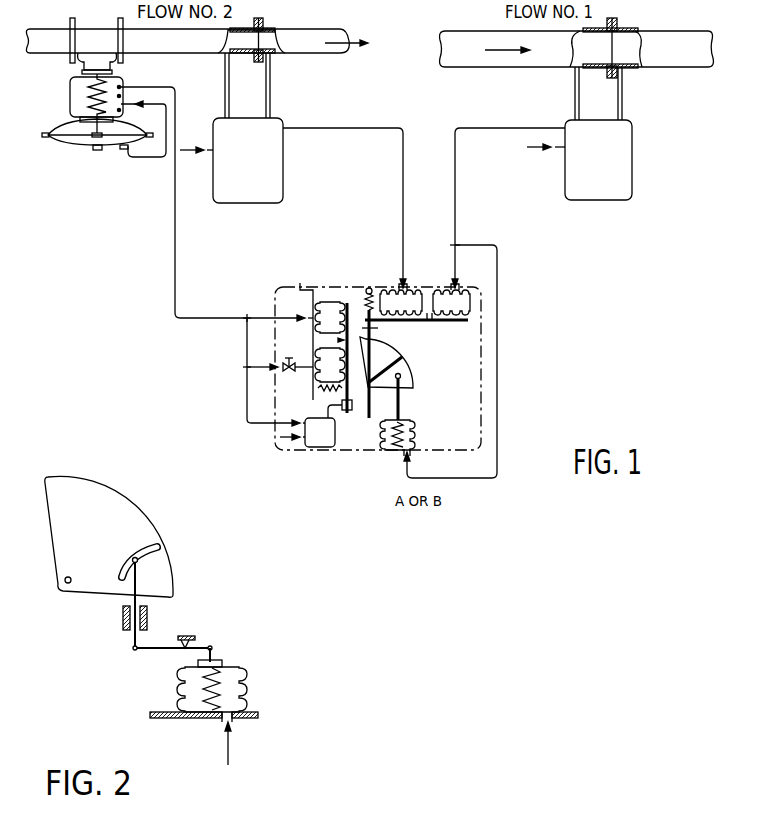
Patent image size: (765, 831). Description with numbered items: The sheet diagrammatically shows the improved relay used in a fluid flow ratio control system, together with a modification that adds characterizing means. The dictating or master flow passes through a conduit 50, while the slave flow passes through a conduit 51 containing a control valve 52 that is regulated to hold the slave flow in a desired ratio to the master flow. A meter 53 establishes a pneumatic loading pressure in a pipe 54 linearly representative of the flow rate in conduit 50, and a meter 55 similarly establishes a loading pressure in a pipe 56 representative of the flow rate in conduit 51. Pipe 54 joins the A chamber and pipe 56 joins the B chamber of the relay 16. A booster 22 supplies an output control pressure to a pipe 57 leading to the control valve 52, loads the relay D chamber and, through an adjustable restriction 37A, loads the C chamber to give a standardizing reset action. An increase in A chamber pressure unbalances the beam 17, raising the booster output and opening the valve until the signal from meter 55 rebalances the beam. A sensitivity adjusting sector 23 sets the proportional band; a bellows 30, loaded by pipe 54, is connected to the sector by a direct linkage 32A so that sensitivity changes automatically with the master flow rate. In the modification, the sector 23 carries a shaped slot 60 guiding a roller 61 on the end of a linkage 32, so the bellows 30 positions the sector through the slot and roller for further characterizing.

In FIG. 1, the relay 16 is at (343, 287).
In FIG. 1, the beam 17 is at (437, 323).
In FIG. 1, the booster 22 is at (323, 426).
In FIG. 1, the sensitivity adjusting sector 23 is at (417, 363).
In FIG. 2, the sensitivity adjusting sector 23 is at (137, 500).
In FIG. 1, the bellows 30 is at (417, 437).
In FIG. 2, the bellows 30 is at (250, 682).
In FIG. 2, the linkage 32 is at (148, 650).
In FIG. 1, the direct linkage 32A is at (403, 401).
In FIG. 1, the adjustable restriction 37A is at (292, 373).
In FIG. 1, the conduit 50 is at (680, 68).
In FIG. 1, the conduit 51 is at (325, 55).
In FIG. 1, the control valve 52 is at (60, 112).
In FIG. 1, the meter 53 is at (609, 168).
In FIG. 1, the pipe 54 is at (546, 126).
In FIG. 1, the meter 55 is at (257, 171).
In FIG. 1, the pipe 56 is at (402, 209).
In FIG. 1, the pipe 57 is at (176, 262).
In FIG. 2, the shaped slot 60 is at (151, 545).
In FIG. 2, the roller 61 is at (132, 562).